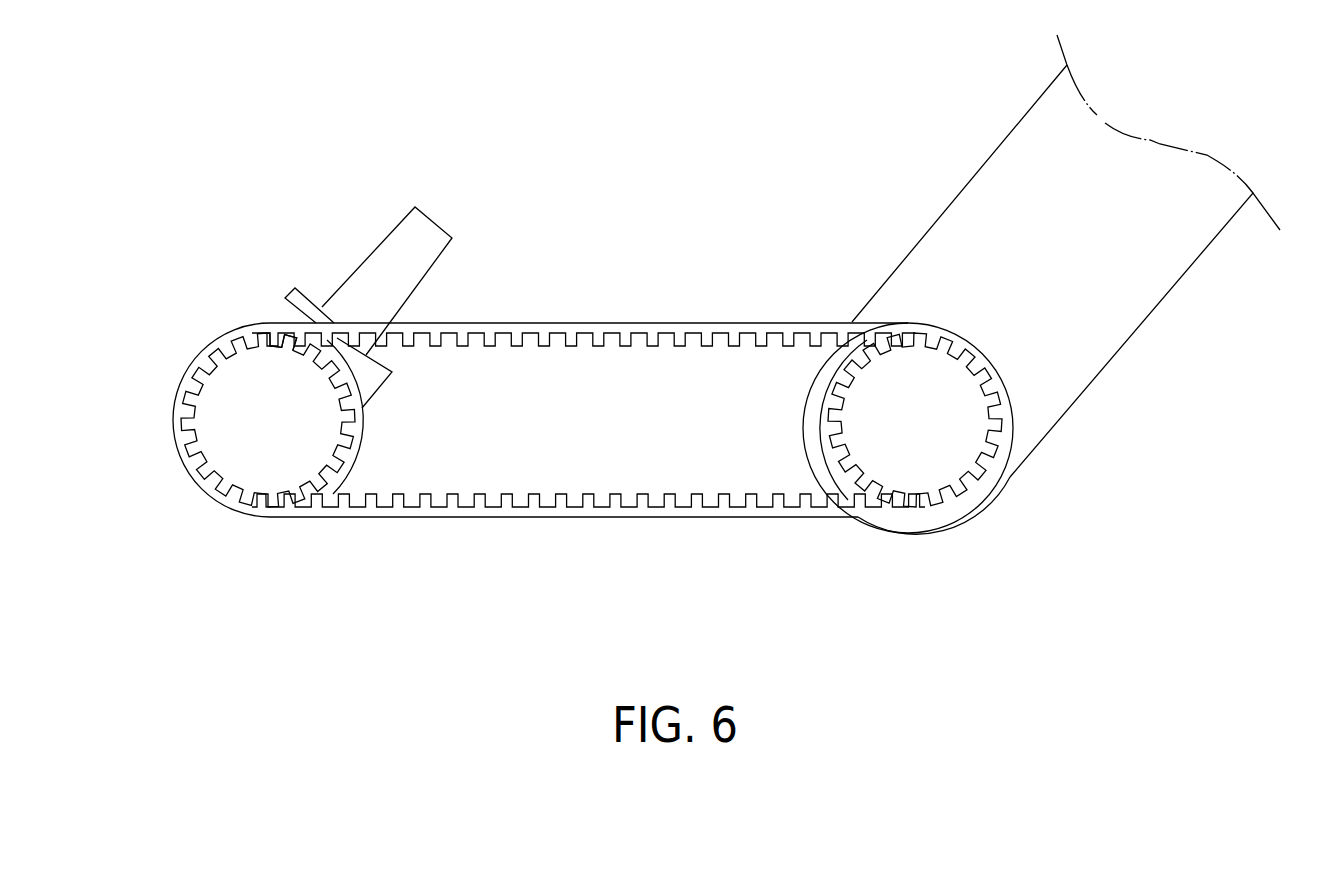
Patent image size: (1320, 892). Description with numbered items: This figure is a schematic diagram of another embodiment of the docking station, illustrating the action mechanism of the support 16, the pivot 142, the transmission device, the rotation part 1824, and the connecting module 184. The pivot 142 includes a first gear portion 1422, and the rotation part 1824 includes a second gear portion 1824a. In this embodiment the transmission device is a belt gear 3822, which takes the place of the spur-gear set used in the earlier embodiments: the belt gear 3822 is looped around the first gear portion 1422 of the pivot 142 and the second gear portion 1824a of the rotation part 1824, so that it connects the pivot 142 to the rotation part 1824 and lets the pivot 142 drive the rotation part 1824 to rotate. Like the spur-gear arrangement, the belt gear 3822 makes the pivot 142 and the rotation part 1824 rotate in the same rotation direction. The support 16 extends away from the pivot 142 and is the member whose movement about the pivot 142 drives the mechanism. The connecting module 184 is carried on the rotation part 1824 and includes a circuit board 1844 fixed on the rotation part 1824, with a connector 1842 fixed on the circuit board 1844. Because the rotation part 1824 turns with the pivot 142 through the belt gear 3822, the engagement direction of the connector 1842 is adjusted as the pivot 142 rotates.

The support 16 is at (992, 183).
The connecting module 184 is at (166, 161).
The connector 1842 is at (391, 262).
The circuit board 1844 is at (297, 300).
The rotation part 1824 is at (343, 437).
The second gear portion 1824a is at (232, 452).
The belt gear 3822 is at (613, 510).
The pivot 142 is at (835, 427).
The first gear portion 1422 is at (950, 452).